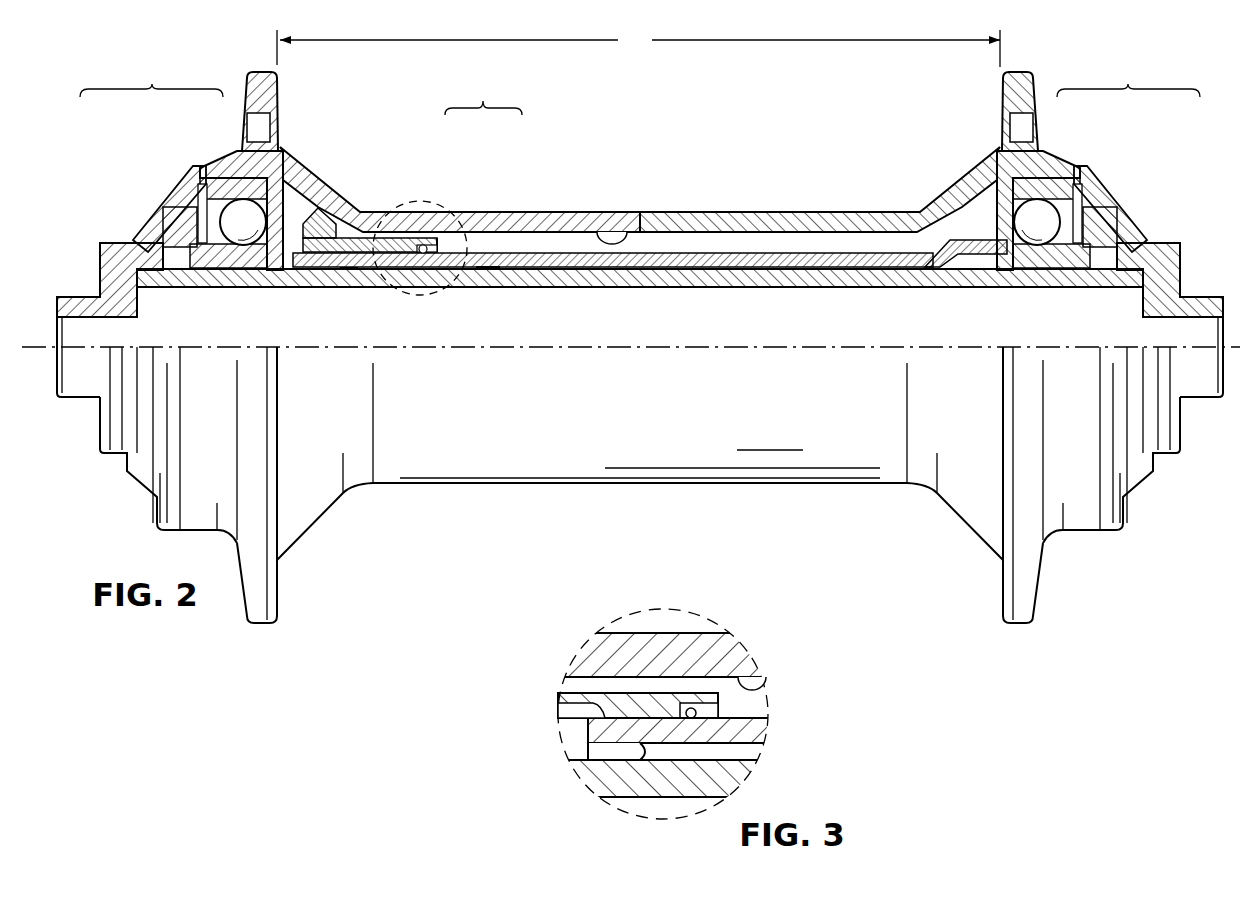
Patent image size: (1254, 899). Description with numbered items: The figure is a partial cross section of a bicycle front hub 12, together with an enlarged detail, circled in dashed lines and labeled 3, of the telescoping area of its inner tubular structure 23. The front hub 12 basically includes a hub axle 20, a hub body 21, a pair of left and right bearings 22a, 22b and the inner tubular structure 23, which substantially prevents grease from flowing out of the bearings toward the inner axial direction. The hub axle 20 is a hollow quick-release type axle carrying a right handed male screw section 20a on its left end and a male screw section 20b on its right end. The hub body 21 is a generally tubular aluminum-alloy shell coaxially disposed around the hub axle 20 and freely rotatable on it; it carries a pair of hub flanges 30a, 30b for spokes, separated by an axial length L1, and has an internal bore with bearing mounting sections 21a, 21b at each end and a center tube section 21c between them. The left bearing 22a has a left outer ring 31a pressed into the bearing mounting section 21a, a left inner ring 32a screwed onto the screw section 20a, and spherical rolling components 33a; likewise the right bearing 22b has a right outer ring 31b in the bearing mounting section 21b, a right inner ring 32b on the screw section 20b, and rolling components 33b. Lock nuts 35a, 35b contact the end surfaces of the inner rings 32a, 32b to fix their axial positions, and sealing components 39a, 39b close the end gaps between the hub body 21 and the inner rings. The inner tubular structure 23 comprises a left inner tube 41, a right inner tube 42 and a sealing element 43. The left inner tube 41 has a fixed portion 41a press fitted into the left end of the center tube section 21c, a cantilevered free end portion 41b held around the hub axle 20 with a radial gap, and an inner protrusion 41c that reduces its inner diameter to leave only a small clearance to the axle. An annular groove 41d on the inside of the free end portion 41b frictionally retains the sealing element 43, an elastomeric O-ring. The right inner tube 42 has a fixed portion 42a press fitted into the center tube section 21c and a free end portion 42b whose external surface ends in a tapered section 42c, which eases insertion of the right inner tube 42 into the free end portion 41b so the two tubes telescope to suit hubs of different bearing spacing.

In FIG. 2, the front hub 12 is at (697, 108).
In FIG. 2, the hub axle 20 is at (640, 330).
In FIG. 3, the hub axle 20 is at (660, 803).
In FIG. 2, the male screw section 20a is at (200, 288).
In FIG. 2, the male screw section 20b is at (1078, 288).
In FIG. 2, the hub body 21 is at (640, 352).
In FIG. 3, the hub body 21 is at (688, 635).
In FIG. 2, the bearing mounting section 21a is at (273, 183).
In FIG. 2, the bearing mounting section 21b is at (993, 222).
In FIG. 2, the center tube section 21c is at (625, 230).
In FIG. 3, the center tube section 21c is at (766, 683).
In FIG. 2, the left bearing 22a is at (173, 163).
In FIG. 2, the right bearing 22b is at (1106, 163).
In FIG. 2, the inner tubular structure 23 is at (650, 202).
In FIG. 2, the hub flange 30a is at (262, 93).
In FIG. 2, the hub flange 30b is at (1018, 93).
In FIG. 2, the left outer ring 31a is at (227, 197).
In FIG. 2, the right outer ring 31b is at (1040, 190).
In FIG. 2, the left inner ring 32a is at (160, 200).
In FIG. 2, the right inner ring 32b is at (1127, 210).
In FIG. 2, the rolling components 33a is at (200, 183).
In FIG. 2, the rolling components 33b is at (1078, 183).
In FIG. 2, the lock nut 35a is at (122, 242).
In FIG. 2, the lock nut 35b is at (1160, 242).
In FIG. 2, the sealing components 39a is at (124, 195).
In FIG. 2, the sealing components 39b is at (1152, 196).
In FIG. 2, the left inner tube 41 is at (394, 222).
In FIG. 3, the left inner tube 41 is at (666, 649).
In FIG. 2, the fixed portion 41a is at (333, 220).
In FIG. 2, the free end portion 41b is at (405, 238).
In FIG. 2, the inner protrusion 41c is at (348, 269).
In FIG. 3, the inner protrusion 41c is at (632, 680).
In FIG. 3, the annular groove 41d is at (720, 703).
In FIG. 2, the right inner tube 42 is at (650, 223).
In FIG. 3, the right inner tube 42 is at (656, 746).
In FIG. 2, the fixed portion 42a is at (962, 232).
In FIG. 2, the free end portion 42b is at (488, 268).
In FIG. 3, the free end portion 42b is at (640, 762).
In FIG. 3, the tapered section 42c is at (600, 713).
In FIG. 2, the sealing element 43 is at (424, 255).
In FIG. 3, the sealing element 43 is at (700, 713).
In FIG. 2, the detail view location 3 is at (395, 200).
In FIG. 2, the axial length L1 is at (638, 48).